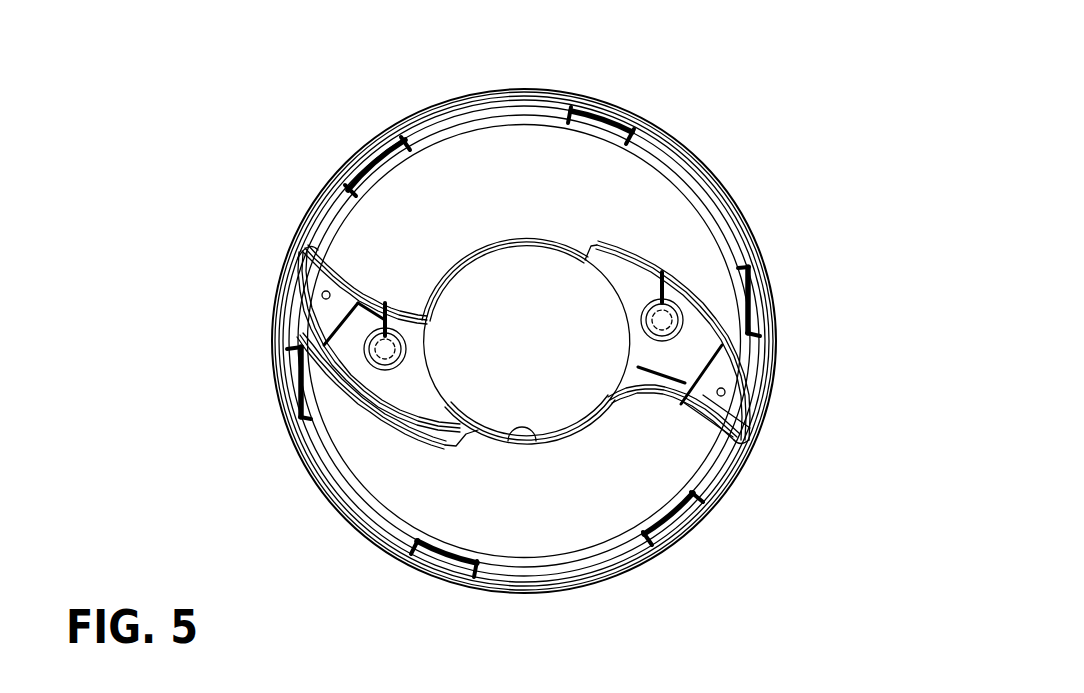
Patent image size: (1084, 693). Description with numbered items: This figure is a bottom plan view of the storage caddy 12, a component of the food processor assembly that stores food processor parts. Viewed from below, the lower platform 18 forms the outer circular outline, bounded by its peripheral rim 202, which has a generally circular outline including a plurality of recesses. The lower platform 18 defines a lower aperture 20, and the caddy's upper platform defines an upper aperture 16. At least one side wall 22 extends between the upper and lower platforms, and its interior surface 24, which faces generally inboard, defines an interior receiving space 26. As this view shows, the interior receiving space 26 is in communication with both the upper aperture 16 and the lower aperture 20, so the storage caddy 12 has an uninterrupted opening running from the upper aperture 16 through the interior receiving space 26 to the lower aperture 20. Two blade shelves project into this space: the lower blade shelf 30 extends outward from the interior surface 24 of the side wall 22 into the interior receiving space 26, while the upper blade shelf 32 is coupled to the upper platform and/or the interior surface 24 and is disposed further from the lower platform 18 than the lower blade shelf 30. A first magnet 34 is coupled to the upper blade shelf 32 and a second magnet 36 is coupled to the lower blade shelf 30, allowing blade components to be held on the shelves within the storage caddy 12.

The storage caddy 12 is at (792, 125).
The peripheral rim 202 is at (741, 467).
The upper aperture 16 is at (498, 369).
The lower platform 18 is at (613, 514).
The lower aperture 20 is at (585, 369).
The side wall 22 is at (462, 302).
The interior surface 24 is at (517, 430).
The interior receiving space 26 is at (548, 316).
The lower blade shelf 30 is at (710, 337).
The upper blade shelf 32 is at (328, 315).
The first magnet 34 is at (375, 354).
The second magnet 36 is at (665, 318).